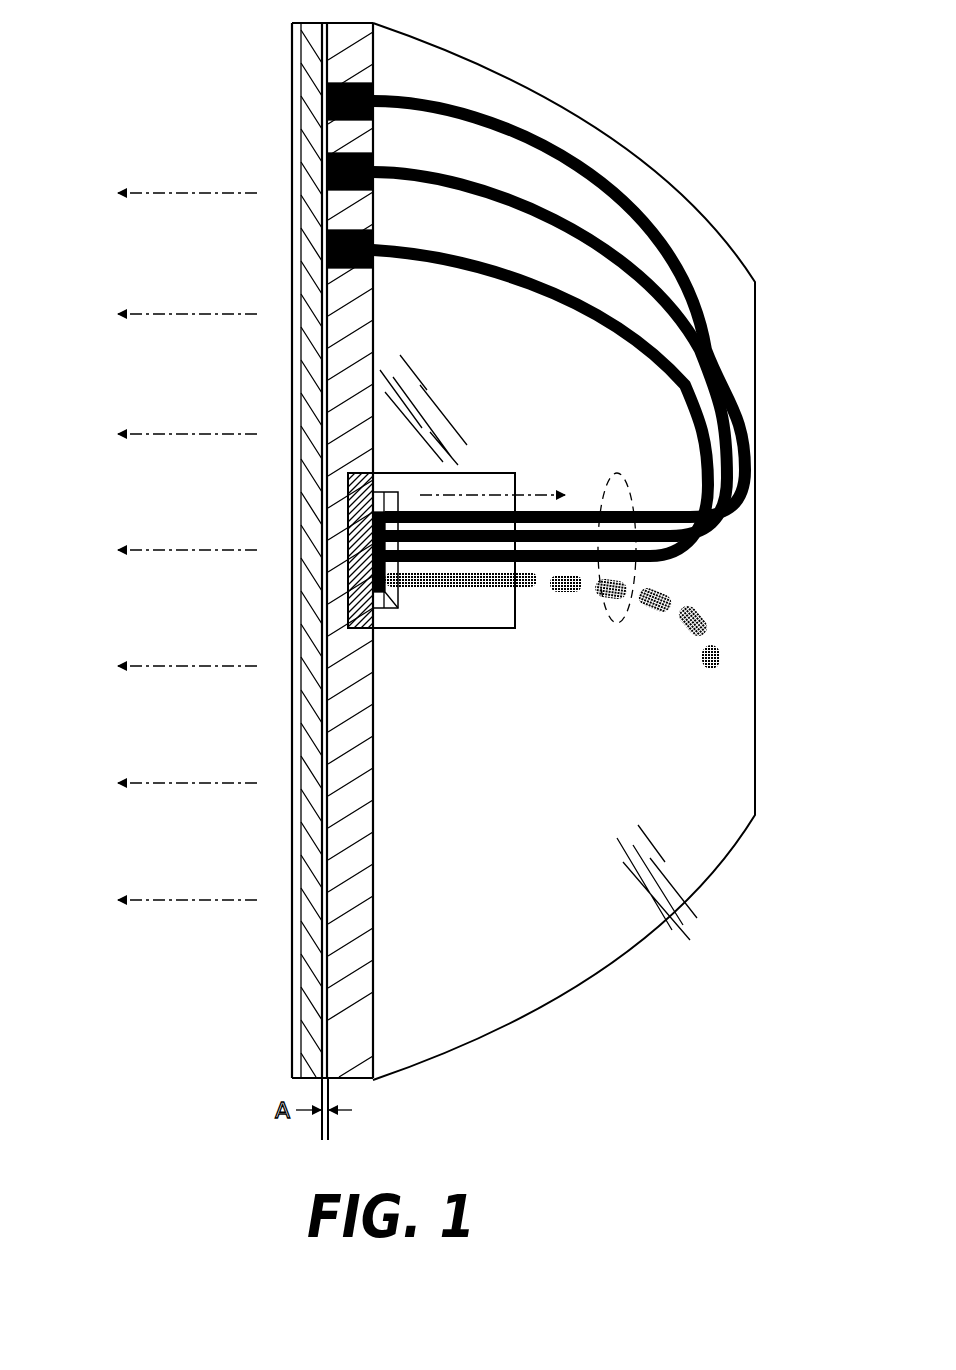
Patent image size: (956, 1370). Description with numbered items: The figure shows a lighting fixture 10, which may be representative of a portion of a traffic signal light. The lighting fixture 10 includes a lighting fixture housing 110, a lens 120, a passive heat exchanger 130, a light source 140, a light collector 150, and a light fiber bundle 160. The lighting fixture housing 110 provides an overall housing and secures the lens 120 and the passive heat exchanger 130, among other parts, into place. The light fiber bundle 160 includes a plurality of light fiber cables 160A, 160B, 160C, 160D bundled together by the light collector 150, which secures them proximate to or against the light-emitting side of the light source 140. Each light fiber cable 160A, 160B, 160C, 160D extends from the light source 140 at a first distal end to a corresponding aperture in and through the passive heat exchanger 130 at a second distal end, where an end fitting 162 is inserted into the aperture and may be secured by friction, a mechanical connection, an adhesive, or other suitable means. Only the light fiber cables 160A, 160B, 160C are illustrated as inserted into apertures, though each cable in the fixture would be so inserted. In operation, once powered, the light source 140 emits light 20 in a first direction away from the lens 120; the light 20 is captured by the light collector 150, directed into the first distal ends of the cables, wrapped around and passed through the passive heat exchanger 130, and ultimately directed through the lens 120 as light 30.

The lighting fixture 10 is at (227, 55).
The light 20 is at (535, 490).
The light 30 is at (178, 436).
The lighting fixture housing 110 is at (690, 905).
The lens 120 is at (305, 570).
The passive heat exchanger 130 is at (360, 705).
The light source 140 is at (396, 606).
The light collector 150 is at (518, 618).
The light fiber bundle 160 is at (620, 476).
The light fiber cable 160A is at (512, 142).
The light fiber cable 160B is at (505, 205).
The light fiber cable 160C is at (500, 285).
The light fiber cable 160D is at (688, 628).
The end fitting 162 is at (375, 100).